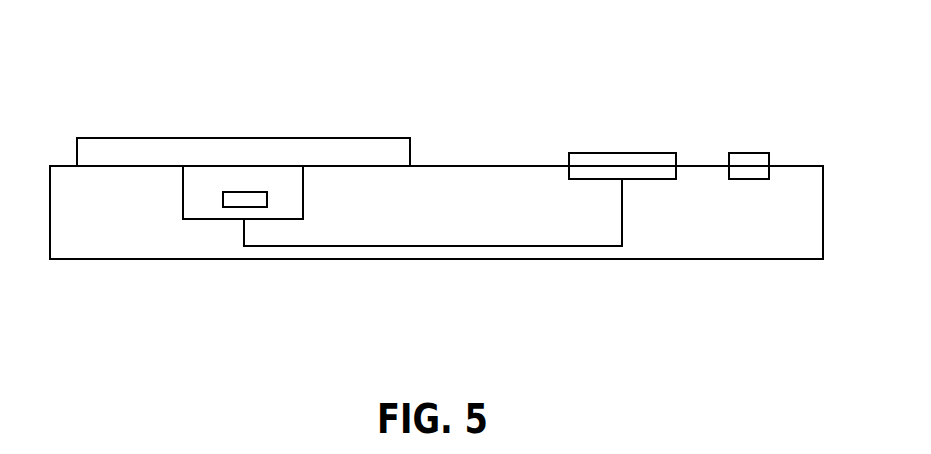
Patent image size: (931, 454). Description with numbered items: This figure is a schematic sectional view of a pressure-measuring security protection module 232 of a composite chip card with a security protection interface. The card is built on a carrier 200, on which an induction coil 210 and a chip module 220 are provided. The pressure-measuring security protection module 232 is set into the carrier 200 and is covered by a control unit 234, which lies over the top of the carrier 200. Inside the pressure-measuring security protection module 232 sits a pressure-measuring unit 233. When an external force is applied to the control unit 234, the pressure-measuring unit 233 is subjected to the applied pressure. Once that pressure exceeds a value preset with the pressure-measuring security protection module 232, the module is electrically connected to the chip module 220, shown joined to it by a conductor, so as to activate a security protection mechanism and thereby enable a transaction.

The carrier 200 is at (92, 245).
The induction coil 210 is at (755, 166).
The chip module 220 is at (636, 165).
The pressure-measuring security protection module 232 is at (197, 206).
The pressure-measuring unit 233 is at (237, 203).
The control unit 234 is at (117, 154).